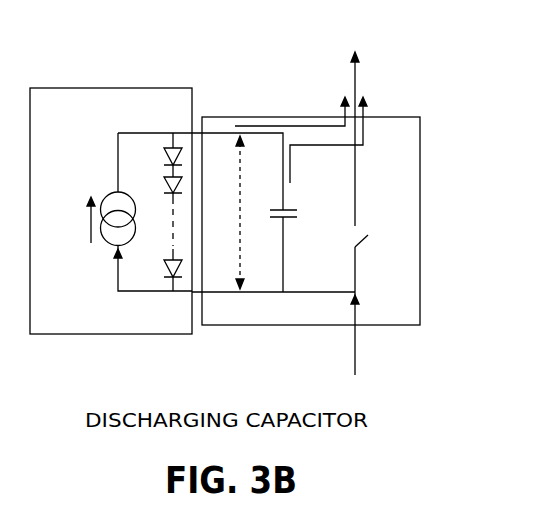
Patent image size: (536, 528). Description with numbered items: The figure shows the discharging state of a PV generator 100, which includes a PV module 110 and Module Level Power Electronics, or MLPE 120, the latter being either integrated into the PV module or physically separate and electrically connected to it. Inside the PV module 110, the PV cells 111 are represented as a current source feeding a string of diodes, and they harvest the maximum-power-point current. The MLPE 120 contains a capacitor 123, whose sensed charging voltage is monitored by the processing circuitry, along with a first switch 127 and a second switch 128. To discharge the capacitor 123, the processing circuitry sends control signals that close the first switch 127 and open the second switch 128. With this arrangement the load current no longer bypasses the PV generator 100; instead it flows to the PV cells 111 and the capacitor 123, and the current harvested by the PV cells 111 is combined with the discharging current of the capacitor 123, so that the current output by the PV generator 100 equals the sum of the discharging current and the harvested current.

The PV generator 100 is at (67, 51).
The PV module 110 is at (78, 334).
The PV cells 111 is at (111, 246).
The Module Level Power Electronics (MLPE) 120 is at (228, 325).
The capacitor 123 is at (297, 217).
The first switch 127 is at (310, 295).
The second switch 128 is at (357, 228).